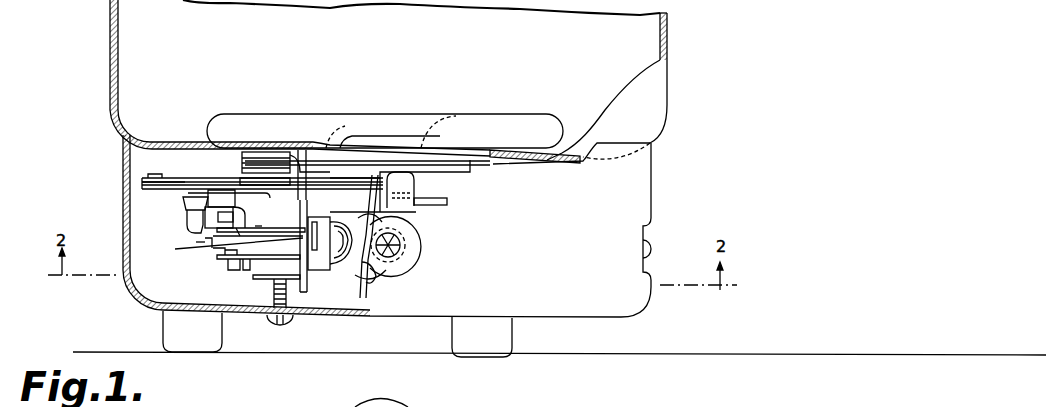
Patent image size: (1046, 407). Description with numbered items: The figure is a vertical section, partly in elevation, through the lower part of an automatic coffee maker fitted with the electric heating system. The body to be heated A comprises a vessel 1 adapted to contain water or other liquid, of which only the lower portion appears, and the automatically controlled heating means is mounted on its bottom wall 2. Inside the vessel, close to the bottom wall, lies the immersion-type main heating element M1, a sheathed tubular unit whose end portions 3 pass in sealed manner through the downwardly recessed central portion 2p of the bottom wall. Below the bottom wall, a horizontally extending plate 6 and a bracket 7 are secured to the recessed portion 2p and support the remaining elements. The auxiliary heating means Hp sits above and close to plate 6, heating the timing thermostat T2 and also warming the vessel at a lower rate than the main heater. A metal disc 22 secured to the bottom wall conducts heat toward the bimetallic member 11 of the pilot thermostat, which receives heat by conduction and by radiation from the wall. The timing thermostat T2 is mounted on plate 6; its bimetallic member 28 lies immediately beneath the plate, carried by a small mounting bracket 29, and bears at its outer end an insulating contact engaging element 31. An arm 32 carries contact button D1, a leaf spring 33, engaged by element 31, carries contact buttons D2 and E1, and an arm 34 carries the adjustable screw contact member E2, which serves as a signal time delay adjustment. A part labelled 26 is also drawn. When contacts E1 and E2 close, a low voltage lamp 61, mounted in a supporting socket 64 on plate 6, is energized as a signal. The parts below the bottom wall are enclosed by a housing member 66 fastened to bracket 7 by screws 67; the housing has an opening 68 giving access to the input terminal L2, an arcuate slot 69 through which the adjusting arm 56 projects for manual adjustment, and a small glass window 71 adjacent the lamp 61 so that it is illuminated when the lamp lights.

The body to be heated A is at (112, 71).
The vessel 1 is at (668, 38).
The bottom wall 2 is at (178, 141).
The downwardly recessed central portion 2p is at (498, 164).
The end portions 3 is at (358, 152).
The main electric heating element M1 is at (358, 114).
The metal disc 22 is at (242, 150).
The mounting bracket 29 is at (333, 187).
The bimetallic actuating member 11 is at (238, 220).
The arm 32 is at (259, 222).
The auxiliary electric heating means Hp is at (192, 176).
The horizontally extending plate 6 is at (140, 188).
The bimetallic actuating member 28 is at (236, 190).
The bracket 26 is at (222, 214).
The contact engaging element 31 is at (188, 224).
The leaf spring 33 is at (175, 250).
The timing thermostat T2 is at (168, 260).
The contact button D1 is at (208, 240).
The contact button D2 is at (216, 252).
The contact member E2 is at (227, 268).
The contact button E1 is at (244, 268).
The bracket 7 is at (293, 280).
The arm 34 is at (290, 280).
The screws 67 is at (284, 300).
The supporting socket 64 is at (336, 270).
The glass window 71 is at (397, 246).
The electric lamp 61 is at (368, 285).
The adjusting arm 56 is at (385, 200).
The arcuate slot 69 is at (447, 203).
The housing member 66 is at (648, 189).
The opening 68 is at (649, 227).
The input terminal L2 is at (651, 250).